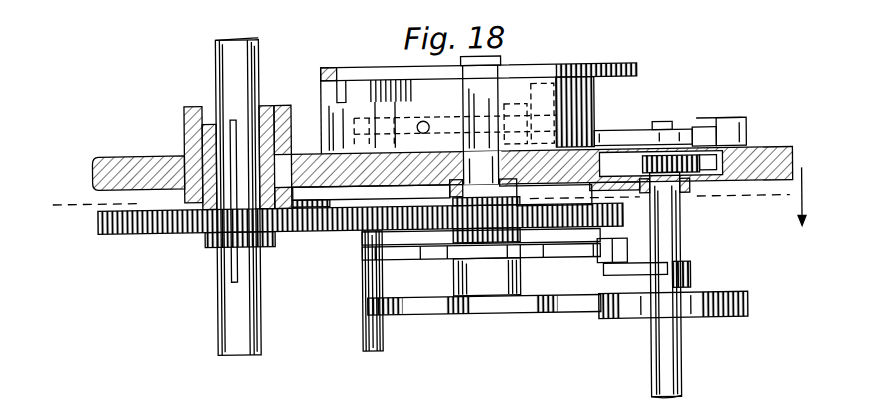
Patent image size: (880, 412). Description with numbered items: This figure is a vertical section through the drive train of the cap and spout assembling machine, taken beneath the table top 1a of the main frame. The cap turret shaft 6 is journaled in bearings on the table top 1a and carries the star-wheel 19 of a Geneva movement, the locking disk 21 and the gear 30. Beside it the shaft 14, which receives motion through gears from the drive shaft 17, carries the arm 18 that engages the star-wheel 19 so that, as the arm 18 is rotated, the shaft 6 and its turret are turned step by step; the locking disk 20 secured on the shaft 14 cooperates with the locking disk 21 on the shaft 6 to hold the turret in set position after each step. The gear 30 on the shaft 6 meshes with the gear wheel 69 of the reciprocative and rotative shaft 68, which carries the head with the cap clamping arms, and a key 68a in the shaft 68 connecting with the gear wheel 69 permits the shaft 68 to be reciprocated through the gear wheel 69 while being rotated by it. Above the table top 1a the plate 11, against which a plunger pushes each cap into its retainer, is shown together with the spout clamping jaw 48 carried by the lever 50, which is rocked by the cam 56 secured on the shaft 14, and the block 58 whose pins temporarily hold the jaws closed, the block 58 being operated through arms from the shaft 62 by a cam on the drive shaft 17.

The table top 1a is at (116, 158).
The shaft 6 is at (487, 287).
The plate 11 is at (638, 72).
The shaft 14 is at (676, 381).
The drive shaft 17 is at (431, 202).
The arm 18 is at (633, 272).
The star-wheel 19 is at (545, 249).
The locking disk 20 is at (748, 304).
The locking disk 21 is at (423, 314).
The gear 30 is at (354, 231).
The spout clamping jaw 48 is at (564, 76).
The lever 50 is at (635, 134).
The cam 56 is at (683, 158).
The block 58 is at (455, 114).
The shaft 62 is at (362, 347).
The shaft 68 is at (262, 334).
The key 68a is at (228, 125).
The gear wheel 69 is at (178, 231).